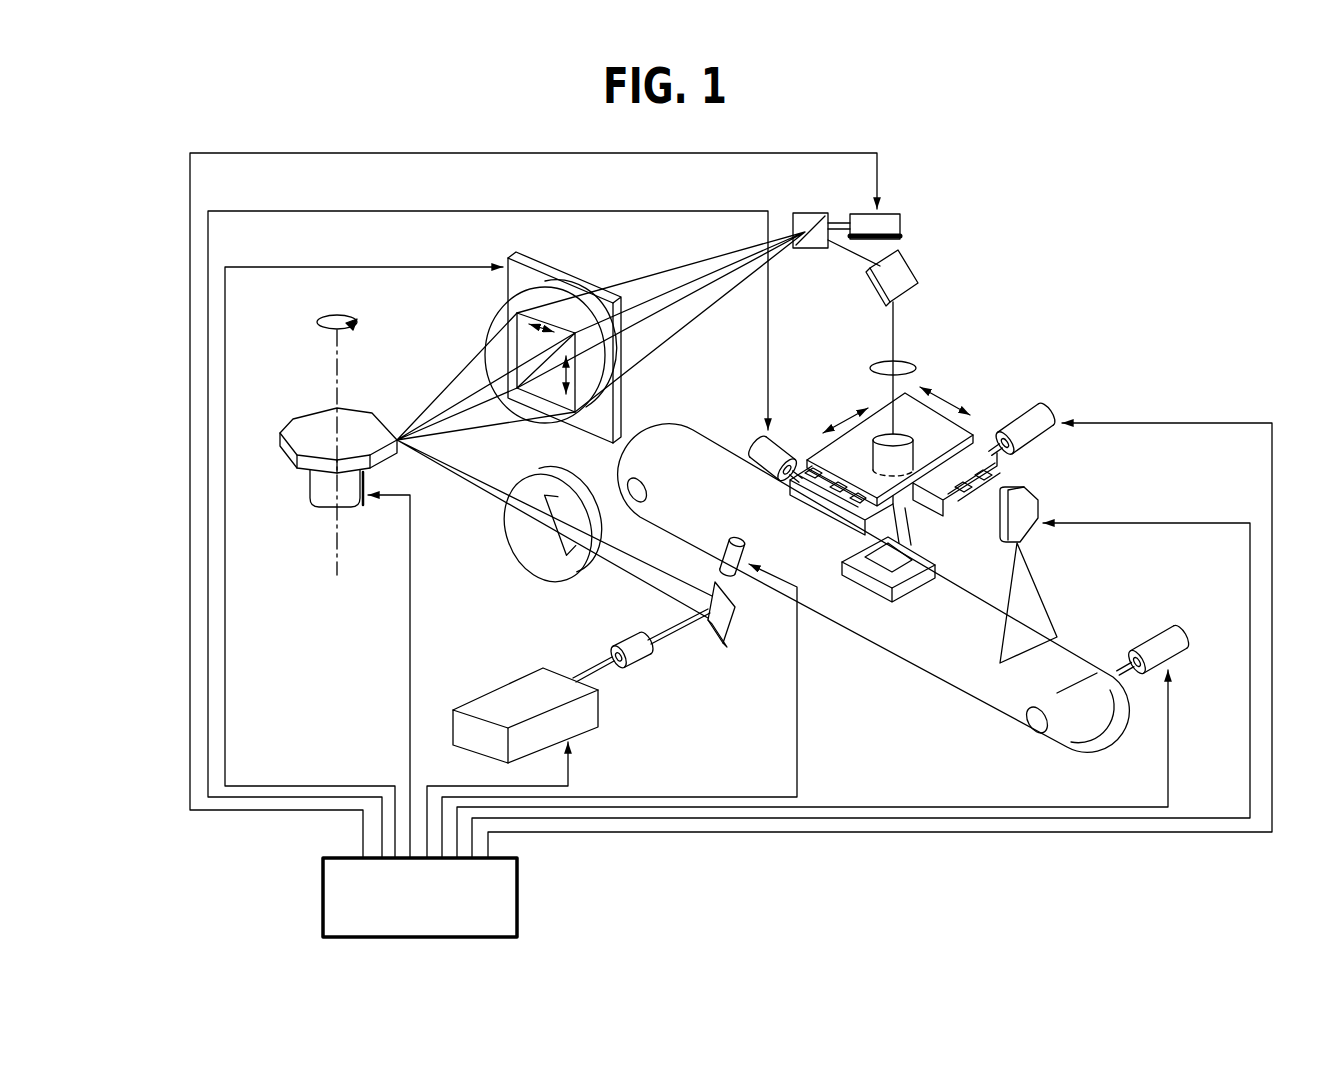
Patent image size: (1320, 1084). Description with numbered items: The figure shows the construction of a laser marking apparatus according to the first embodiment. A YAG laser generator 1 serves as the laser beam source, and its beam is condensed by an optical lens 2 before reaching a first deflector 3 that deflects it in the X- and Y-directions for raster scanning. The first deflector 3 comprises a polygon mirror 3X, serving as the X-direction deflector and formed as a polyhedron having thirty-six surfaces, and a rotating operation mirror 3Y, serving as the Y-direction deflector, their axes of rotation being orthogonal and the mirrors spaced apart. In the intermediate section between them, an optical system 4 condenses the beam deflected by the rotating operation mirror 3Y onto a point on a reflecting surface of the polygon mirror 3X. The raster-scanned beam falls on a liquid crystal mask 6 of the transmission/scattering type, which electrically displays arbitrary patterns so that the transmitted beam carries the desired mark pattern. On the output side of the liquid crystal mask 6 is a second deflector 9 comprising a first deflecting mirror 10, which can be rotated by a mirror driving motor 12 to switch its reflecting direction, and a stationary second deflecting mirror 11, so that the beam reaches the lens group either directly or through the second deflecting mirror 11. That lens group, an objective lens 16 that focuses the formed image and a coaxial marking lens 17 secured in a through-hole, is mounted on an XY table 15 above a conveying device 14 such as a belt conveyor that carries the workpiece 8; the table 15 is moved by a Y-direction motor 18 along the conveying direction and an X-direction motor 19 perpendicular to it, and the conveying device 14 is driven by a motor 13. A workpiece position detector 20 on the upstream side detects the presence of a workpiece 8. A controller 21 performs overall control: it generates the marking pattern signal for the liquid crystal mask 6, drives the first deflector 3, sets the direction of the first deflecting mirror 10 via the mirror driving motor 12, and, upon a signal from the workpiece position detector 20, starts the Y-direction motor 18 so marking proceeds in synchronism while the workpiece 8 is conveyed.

The YAG laser generator 1 is at (500, 687).
The optical lens 2 is at (620, 645).
The first deflector 3 is at (318, 445).
The polygon mirror 3X is at (357, 410).
The rotating operation mirror 3Y is at (724, 645).
The optical system 4 is at (548, 479).
The liquid crystal mask 6 is at (553, 270).
The workpiece 8 is at (925, 558).
The second deflector 9 is at (990, 306).
The first deflecting mirror 10 is at (806, 214).
The second deflecting mirror 11 is at (918, 280).
The mirror driving motor 12 is at (898, 216).
The motor 13 is at (1152, 628).
The conveying device 14 is at (1080, 652).
The XY table 15 is at (815, 458).
The objective lens 16 is at (912, 365).
The marking lens 17 is at (945, 430).
The Y-direction motor 18 is at (755, 438).
The X-direction motor 19 is at (1042, 412).
The workpiece position detector 20 is at (1040, 506).
The controller 21 is at (519, 897).